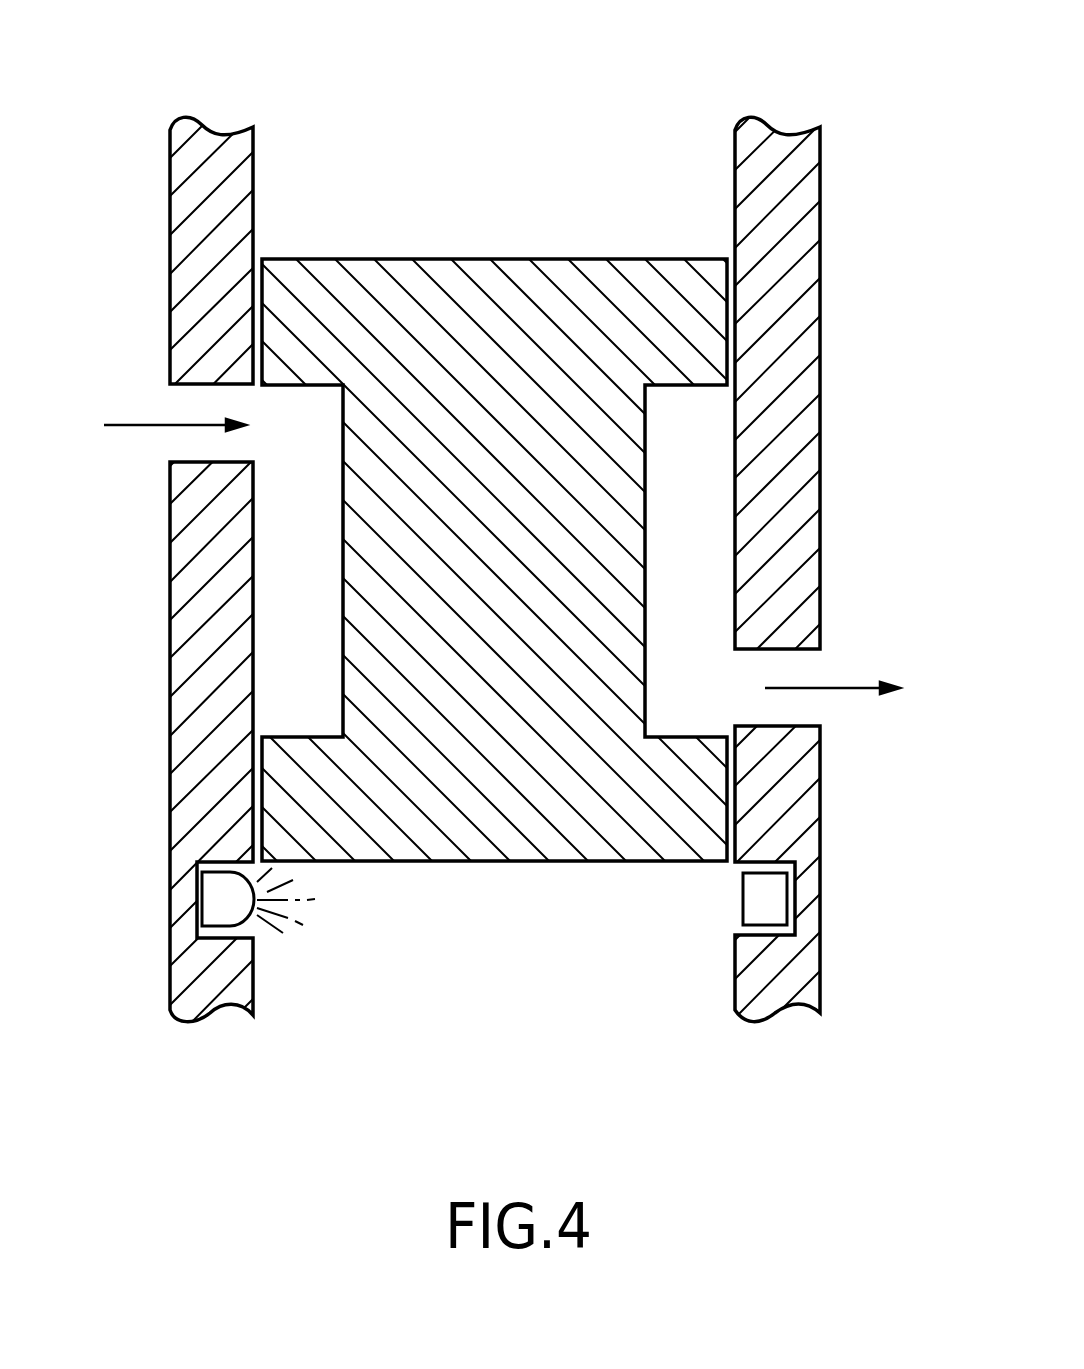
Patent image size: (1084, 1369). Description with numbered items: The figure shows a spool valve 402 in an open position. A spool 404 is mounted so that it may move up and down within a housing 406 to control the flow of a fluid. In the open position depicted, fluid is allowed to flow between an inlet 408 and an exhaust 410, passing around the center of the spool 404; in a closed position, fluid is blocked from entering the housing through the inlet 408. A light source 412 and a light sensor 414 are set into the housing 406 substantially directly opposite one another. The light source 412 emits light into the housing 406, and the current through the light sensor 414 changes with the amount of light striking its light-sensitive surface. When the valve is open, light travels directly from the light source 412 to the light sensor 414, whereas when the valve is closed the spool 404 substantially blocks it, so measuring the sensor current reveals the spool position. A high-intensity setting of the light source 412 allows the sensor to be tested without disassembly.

The spool valve 402 is at (218, 143).
The spool 404 is at (710, 312).
The housing 406 is at (793, 485).
The inlet 408 is at (148, 424).
The exhaust 410 is at (861, 685).
The light source 412 is at (220, 900).
The light sensor 414 is at (777, 890).